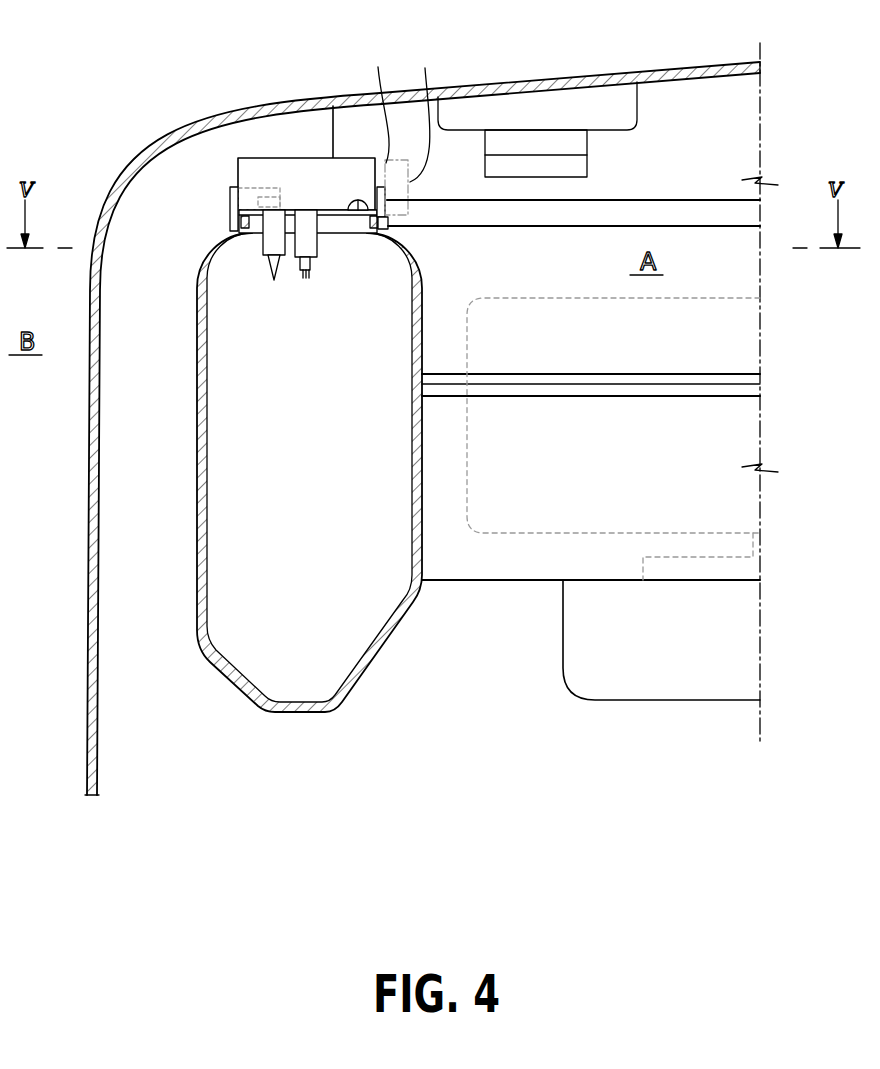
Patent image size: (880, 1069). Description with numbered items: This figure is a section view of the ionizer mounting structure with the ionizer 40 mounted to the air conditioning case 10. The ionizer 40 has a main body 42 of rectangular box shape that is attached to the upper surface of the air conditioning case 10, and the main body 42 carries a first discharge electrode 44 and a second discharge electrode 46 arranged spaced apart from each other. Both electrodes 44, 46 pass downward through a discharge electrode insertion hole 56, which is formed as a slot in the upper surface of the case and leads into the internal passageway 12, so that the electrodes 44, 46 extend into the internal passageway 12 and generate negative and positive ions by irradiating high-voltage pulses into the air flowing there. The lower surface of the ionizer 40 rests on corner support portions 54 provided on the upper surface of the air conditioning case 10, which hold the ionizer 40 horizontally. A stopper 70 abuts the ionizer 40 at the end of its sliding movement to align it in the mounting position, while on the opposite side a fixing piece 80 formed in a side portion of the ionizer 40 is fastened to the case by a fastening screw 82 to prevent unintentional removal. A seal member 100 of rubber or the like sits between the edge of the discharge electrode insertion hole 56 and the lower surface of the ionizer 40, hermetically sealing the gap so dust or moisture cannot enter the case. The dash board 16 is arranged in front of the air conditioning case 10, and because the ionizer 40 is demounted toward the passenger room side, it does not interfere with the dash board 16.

The air conditioning case 10 is at (309, 546).
The internal passageway 12 is at (343, 633).
The dash board 16 is at (137, 163).
The ionizer 40 is at (295, 191).
The main body 42 is at (322, 157).
The first discharge electrode 44 is at (272, 265).
The second discharge electrode 46 is at (311, 268).
The corner support portion 54 is at (240, 211).
The discharge electrode insertion hole 56 is at (260, 232).
The stopper 70 is at (233, 197).
The fixing piece 80 is at (388, 213).
The fastening screw 82 is at (358, 198).
The seal member 100 is at (389, 228).